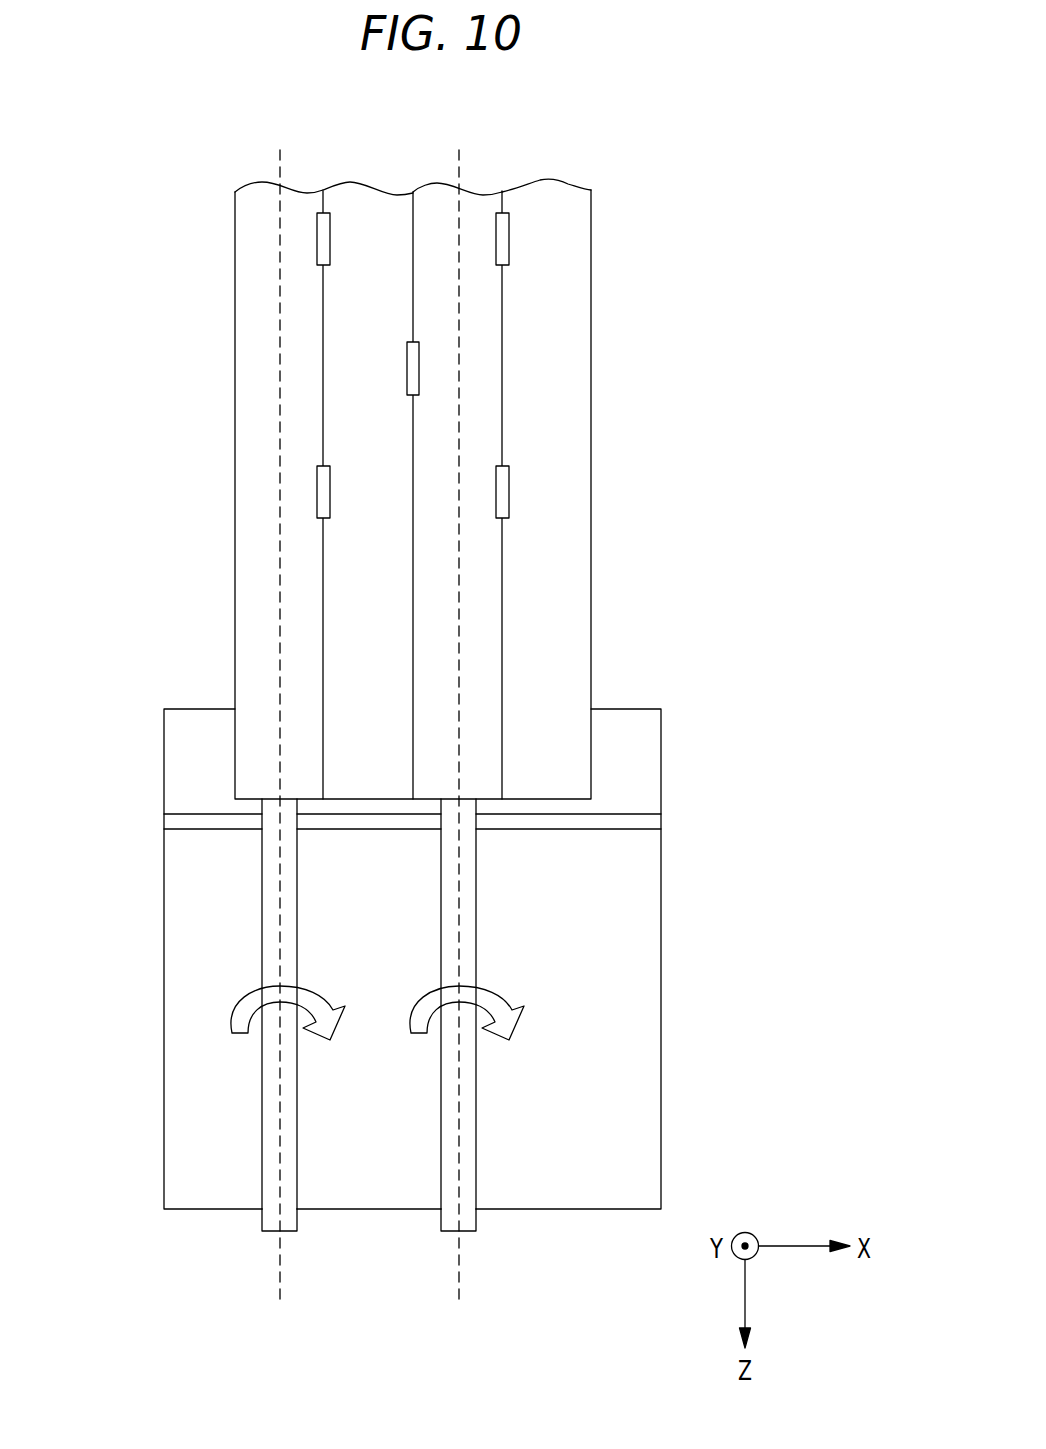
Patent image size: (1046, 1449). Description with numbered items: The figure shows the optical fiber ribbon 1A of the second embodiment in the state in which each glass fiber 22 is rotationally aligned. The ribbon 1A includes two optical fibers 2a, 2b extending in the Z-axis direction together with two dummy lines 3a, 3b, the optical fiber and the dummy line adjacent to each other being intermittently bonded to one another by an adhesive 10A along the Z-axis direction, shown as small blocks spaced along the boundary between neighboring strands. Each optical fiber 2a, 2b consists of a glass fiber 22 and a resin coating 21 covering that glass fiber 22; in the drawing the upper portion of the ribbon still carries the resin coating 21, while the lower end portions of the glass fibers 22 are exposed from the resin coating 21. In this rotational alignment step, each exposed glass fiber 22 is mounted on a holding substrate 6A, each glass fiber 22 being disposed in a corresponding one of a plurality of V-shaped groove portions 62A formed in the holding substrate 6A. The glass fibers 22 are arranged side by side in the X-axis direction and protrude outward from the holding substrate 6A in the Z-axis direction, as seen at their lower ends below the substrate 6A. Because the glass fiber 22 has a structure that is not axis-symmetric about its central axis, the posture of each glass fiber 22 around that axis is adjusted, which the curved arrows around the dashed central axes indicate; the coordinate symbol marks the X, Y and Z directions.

The optical fiber ribbon 1A is at (163, 268).
The optical fiber 2a is at (262, 187).
The optical fiber 2b is at (470, 190).
The dummy line 3a is at (366, 190).
The dummy line 3b is at (555, 186).
The adhesive 10A is at (405, 368).
The resin coating 21 is at (247, 606).
The glass fiber 22 is at (268, 1222).
The holding substrate 6A is at (651, 924).
The V-shaped groove portion 62A is at (262, 1076).